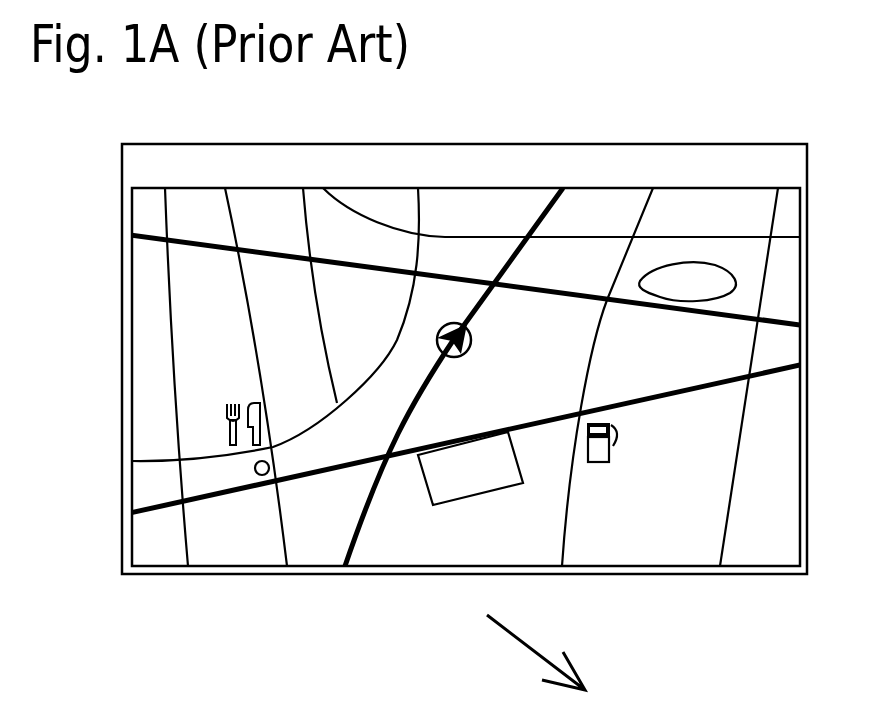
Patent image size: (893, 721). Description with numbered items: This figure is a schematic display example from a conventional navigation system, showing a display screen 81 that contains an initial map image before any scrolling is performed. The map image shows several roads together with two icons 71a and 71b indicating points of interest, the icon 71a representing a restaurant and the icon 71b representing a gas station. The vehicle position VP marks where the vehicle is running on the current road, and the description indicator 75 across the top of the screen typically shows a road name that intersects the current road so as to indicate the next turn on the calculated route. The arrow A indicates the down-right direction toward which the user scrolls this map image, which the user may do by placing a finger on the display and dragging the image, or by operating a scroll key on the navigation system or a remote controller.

The display screen 81 is at (621, 130).
The description indicator 75 is at (245, 155).
The icon 71a is at (247, 403).
The icon 71b is at (597, 462).
The vehicle position VP is at (473, 338).
The arrow A is at (536, 641).